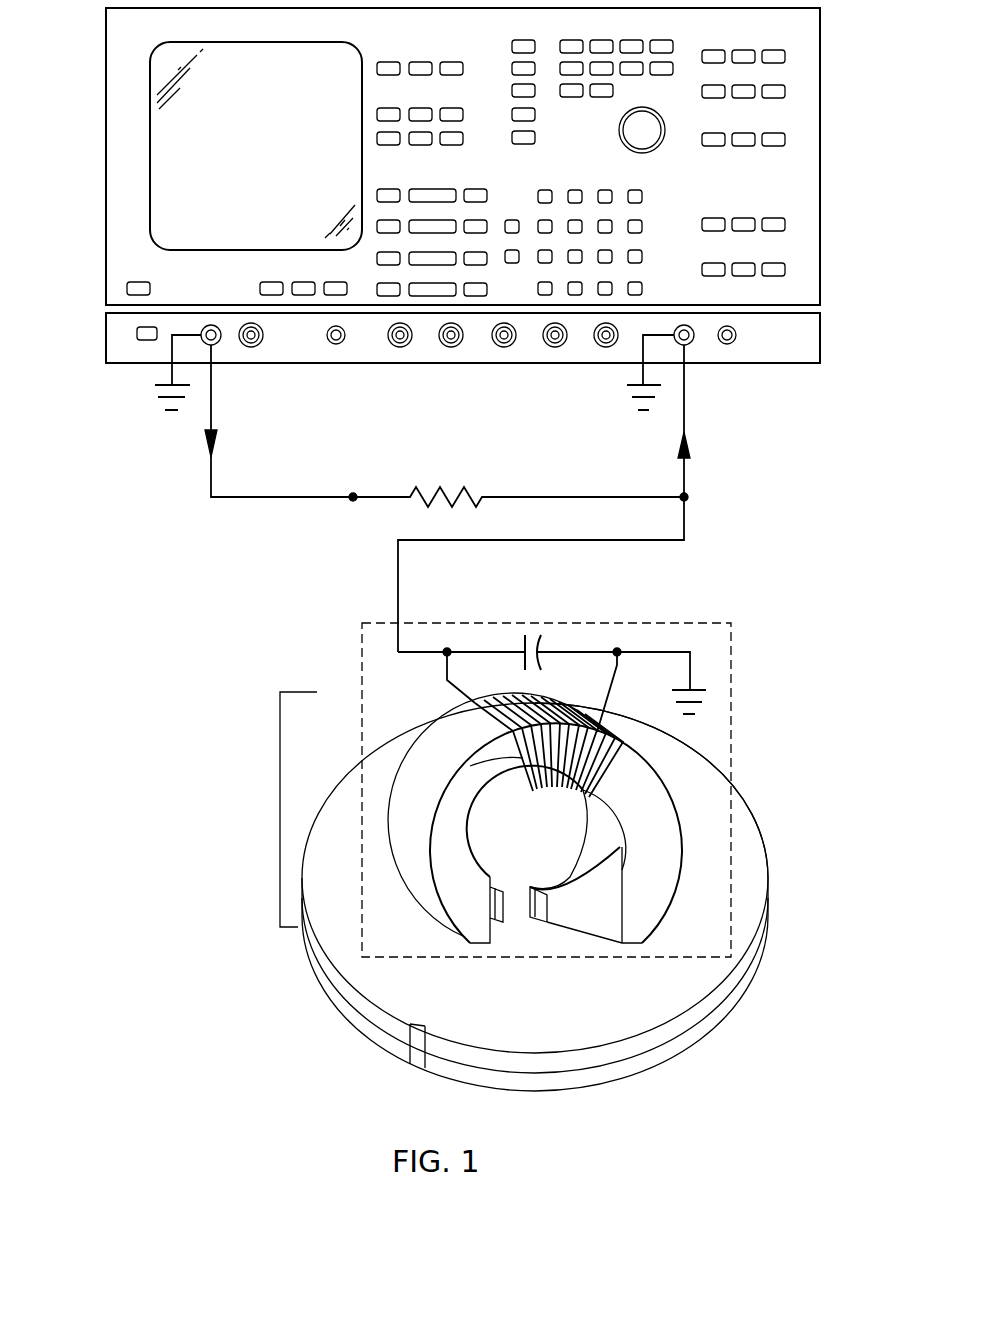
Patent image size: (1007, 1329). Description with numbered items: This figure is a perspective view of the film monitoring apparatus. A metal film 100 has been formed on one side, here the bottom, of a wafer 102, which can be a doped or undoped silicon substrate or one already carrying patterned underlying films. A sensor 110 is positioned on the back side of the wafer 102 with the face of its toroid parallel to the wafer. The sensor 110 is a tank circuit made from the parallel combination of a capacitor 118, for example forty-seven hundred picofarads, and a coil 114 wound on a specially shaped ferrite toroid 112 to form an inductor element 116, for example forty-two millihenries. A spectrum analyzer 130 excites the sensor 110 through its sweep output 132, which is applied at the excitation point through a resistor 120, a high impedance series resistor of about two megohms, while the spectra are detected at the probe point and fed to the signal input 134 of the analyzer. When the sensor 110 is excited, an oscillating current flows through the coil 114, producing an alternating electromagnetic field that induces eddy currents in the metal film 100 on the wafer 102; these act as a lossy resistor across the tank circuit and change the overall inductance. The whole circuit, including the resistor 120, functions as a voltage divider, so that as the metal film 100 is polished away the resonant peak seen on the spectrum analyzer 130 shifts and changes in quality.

The metal film 100 is at (698, 1045).
The wafer 102 is at (766, 848).
The sensor 110 is at (712, 623).
The ferrite toroid 112 is at (670, 793).
The coil 114 is at (470, 766).
The inductor element 116 is at (280, 748).
The capacitor 118 is at (515, 645).
The resistor 120 is at (431, 488).
The spectrum analyzer 130 is at (821, 120).
The sweep output 132 is at (211, 417).
The signal input 134 is at (684, 420).